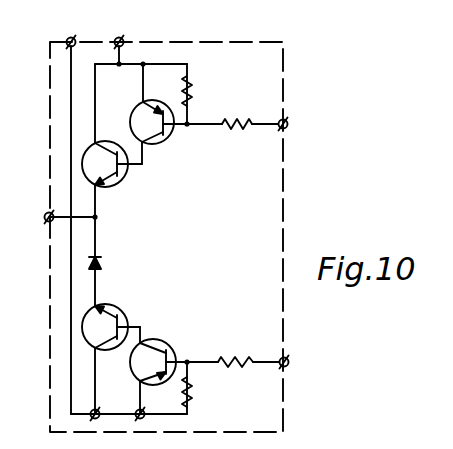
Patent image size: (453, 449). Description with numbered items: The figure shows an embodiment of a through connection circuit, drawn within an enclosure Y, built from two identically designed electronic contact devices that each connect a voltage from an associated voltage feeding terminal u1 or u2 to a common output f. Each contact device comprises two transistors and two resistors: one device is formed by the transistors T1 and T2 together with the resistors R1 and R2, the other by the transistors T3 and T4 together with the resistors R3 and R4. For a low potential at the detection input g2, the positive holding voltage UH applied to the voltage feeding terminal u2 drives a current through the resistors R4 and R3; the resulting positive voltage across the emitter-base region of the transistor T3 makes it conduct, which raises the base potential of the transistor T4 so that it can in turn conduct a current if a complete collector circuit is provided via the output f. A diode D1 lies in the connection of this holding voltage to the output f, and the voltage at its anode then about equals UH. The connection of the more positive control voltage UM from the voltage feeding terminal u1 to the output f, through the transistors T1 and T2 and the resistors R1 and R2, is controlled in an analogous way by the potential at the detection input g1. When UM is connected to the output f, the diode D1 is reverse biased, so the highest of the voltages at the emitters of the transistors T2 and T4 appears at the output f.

The circuit unit enclosure Y is at (283, 200).
The voltage feeding terminal u1 is at (122, 36).
The voltage feeding terminal u2 is at (74, 36).
The common output f is at (42, 217).
The detection input g1 is at (288, 124).
The detection input g2 is at (289, 362).
The resistor R1 is at (225, 120).
The resistor R2 is at (190, 86).
The resistor R3 is at (226, 356).
The resistor R4 is at (190, 390).
The transistor T1 is at (170, 136).
The transistor T2 is at (119, 182).
The transistor T3 is at (166, 343).
The transistor T4 is at (117, 308).
The diode D1 is at (101, 262).